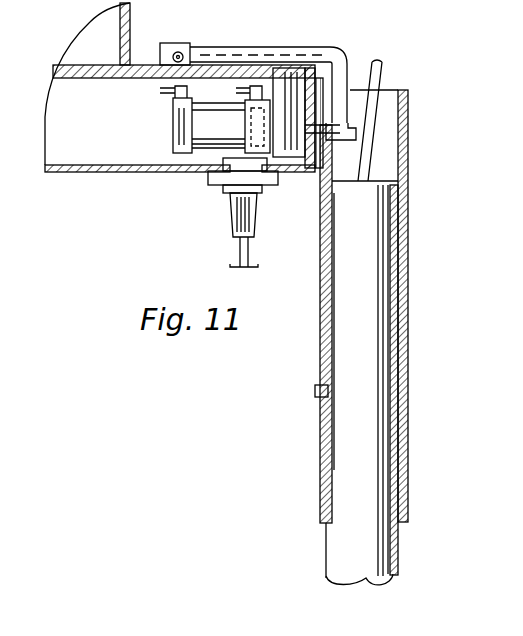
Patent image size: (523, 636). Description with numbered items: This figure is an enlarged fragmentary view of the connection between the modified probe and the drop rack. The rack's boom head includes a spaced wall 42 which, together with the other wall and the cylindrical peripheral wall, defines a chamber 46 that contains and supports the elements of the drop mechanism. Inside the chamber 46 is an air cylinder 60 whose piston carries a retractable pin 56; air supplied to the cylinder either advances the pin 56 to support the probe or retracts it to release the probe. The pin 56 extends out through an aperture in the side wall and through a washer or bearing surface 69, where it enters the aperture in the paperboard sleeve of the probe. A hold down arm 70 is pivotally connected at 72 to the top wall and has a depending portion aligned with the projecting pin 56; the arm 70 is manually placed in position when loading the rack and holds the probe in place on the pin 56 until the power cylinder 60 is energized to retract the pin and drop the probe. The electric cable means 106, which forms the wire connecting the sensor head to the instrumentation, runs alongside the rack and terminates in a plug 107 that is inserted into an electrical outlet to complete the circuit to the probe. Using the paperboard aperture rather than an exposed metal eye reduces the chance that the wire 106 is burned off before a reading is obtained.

The wall 42 is at (148, 166).
The chamber 46 is at (95, 140).
The retractable pin 56 is at (356, 130).
The air cylinder 60 is at (173, 110).
The bearing surface 69 is at (321, 170).
The hold down arm 70 is at (253, 53).
The pivotal connection 72 is at (180, 52).
The electric cable means 106 is at (380, 72).
The plug 107 is at (235, 218).